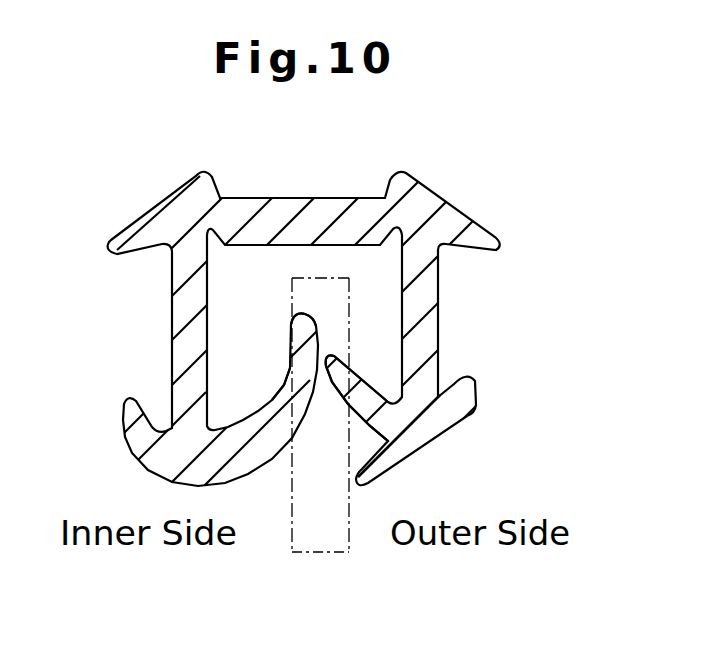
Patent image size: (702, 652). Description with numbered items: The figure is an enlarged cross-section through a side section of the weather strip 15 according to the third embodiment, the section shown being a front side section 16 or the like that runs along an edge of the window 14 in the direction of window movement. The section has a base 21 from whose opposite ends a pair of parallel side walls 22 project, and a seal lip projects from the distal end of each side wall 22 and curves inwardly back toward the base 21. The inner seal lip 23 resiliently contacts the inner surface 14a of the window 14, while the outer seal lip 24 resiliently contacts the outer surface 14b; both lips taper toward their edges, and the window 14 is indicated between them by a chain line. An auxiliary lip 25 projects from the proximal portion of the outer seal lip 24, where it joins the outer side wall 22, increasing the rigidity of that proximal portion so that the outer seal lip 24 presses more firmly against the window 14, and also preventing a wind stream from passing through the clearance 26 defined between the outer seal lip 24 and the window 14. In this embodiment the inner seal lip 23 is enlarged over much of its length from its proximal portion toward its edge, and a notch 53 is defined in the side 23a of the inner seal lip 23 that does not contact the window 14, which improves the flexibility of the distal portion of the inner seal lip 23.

The window 14 is at (327, 545).
The inner surface 14a is at (292, 536).
The outer surface 14b is at (350, 536).
The weather strip 15 is at (252, 197).
The front side section 16 is at (336, 197).
The base 21 is at (247, 246).
The side walls 22 is at (172, 312).
The inner seal lip 23 is at (232, 438).
The side of the inner seal lip 23a is at (288, 385).
The outer seal lip 24 is at (368, 392).
The auxiliary lip 25 is at (388, 468).
The clearance 26 is at (370, 443).
The notch 53 is at (255, 420).